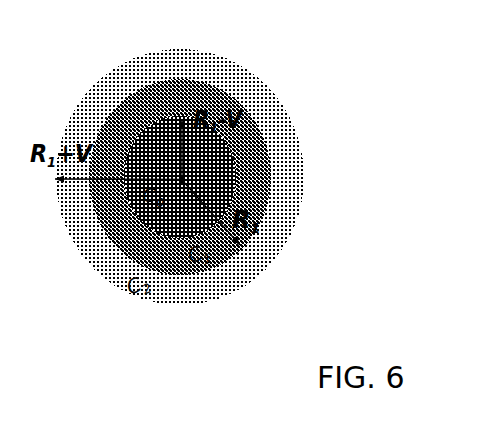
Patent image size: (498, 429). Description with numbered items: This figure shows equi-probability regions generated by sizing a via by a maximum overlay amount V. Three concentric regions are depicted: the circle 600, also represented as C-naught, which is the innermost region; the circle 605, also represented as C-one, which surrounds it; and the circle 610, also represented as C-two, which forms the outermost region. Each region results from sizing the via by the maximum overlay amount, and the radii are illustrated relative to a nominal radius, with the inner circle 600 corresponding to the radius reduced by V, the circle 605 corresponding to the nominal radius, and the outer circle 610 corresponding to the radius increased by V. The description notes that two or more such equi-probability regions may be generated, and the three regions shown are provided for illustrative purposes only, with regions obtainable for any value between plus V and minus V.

The circle 600 is at (142, 133).
The circle 605 is at (265, 167).
The circle 610 is at (273, 262).